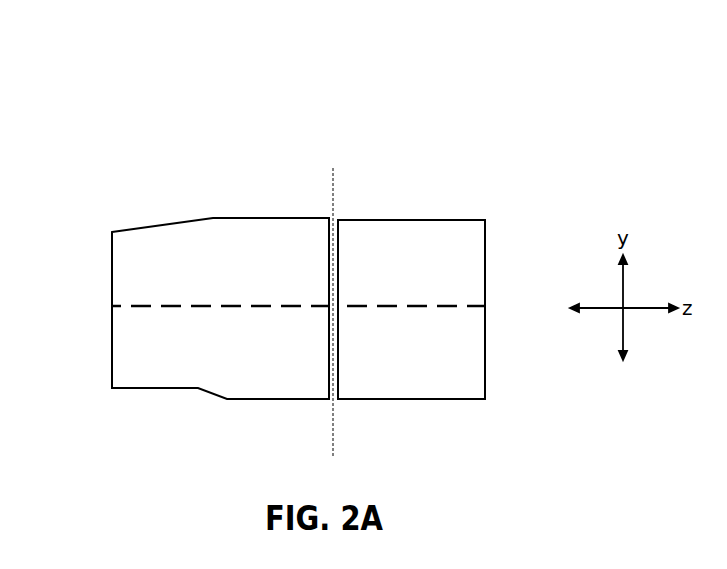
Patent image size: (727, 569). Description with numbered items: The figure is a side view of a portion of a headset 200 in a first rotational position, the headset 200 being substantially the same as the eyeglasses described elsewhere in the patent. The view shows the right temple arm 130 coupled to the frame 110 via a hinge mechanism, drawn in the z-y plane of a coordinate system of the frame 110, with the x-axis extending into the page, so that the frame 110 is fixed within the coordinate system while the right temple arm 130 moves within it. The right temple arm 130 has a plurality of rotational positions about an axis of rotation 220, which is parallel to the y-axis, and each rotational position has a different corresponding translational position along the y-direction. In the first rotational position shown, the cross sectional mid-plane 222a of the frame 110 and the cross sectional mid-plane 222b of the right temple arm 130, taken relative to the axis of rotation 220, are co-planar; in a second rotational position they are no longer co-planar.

The headset 200 is at (377, 35).
The right temple arm 130 is at (249, 263).
The axis of rotation 220 is at (337, 208).
The frame 110 is at (420, 248).
The cross sectional mid-plane of the right temple arm 222b is at (198, 313).
The cross sectional mid-plane of the frame 222a is at (401, 316).